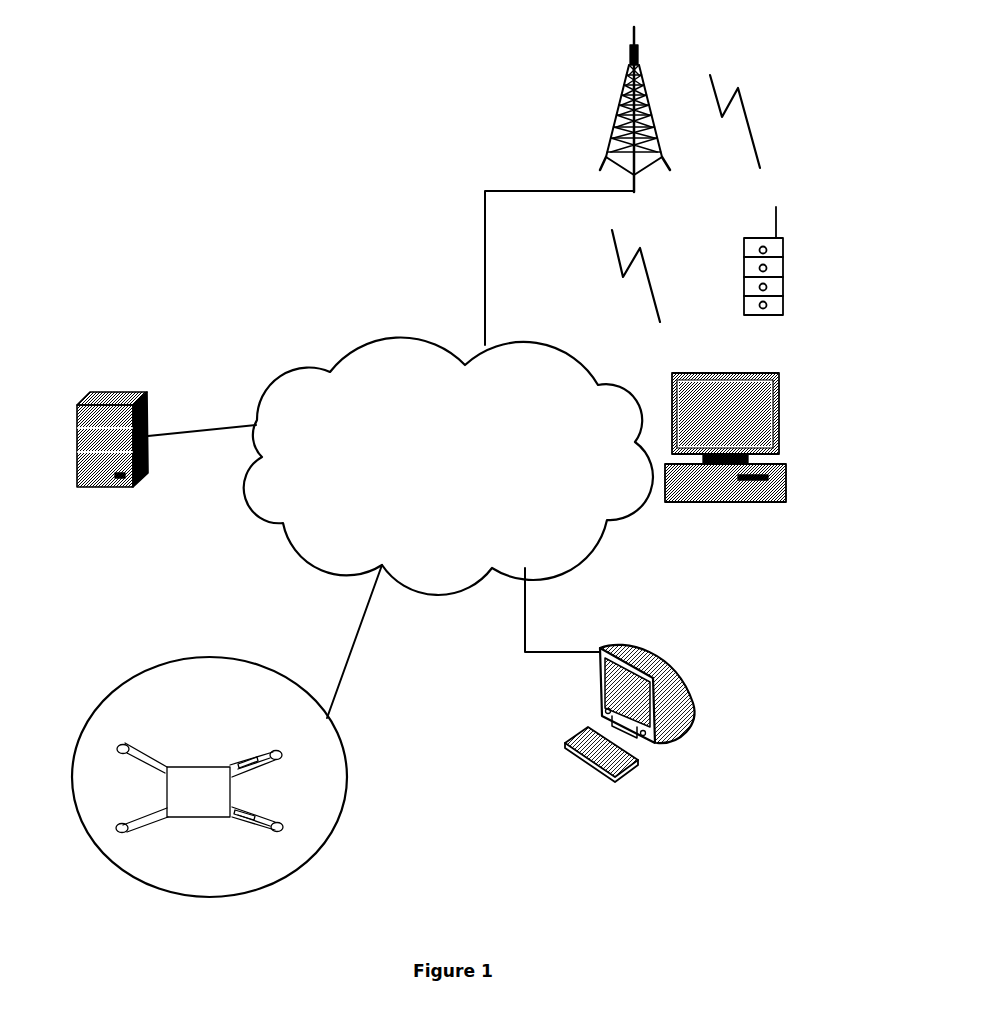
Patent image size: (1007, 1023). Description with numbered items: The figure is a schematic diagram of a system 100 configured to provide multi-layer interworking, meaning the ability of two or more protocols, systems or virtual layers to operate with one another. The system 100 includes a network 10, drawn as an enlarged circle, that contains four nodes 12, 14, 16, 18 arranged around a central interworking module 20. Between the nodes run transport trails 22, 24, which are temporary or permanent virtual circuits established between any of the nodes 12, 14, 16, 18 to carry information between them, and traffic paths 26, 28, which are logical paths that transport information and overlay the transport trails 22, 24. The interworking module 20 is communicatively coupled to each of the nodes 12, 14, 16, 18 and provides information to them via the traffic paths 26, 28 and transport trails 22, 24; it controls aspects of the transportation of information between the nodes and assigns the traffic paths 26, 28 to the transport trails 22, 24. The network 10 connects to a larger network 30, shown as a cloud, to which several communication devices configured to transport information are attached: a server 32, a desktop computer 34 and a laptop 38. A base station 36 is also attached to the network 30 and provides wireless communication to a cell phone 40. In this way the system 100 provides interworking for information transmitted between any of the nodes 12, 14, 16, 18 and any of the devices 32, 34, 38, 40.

The system 100 is at (438, 37).
The network 10 is at (209, 746).
The node 12 is at (127, 747).
The node 14 is at (122, 833).
The node 16 is at (280, 757).
The node 18 is at (283, 827).
The interworking module 20 is at (193, 765).
The transport trail 22 is at (258, 752).
The transport trail 24 is at (258, 813).
The traffic path 26 is at (248, 767).
The traffic path 28 is at (242, 820).
The network 30 is at (380, 338).
The server 32 is at (113, 390).
The desktop computer 34 is at (640, 645).
The base station 36 is at (642, 67).
The laptop 38 is at (723, 371).
The cell phone 40 is at (783, 265).